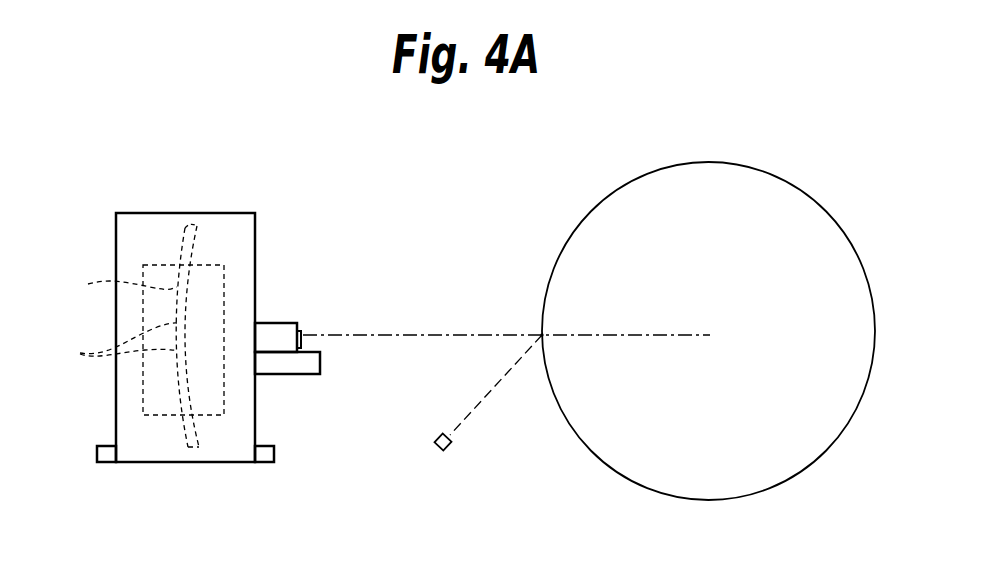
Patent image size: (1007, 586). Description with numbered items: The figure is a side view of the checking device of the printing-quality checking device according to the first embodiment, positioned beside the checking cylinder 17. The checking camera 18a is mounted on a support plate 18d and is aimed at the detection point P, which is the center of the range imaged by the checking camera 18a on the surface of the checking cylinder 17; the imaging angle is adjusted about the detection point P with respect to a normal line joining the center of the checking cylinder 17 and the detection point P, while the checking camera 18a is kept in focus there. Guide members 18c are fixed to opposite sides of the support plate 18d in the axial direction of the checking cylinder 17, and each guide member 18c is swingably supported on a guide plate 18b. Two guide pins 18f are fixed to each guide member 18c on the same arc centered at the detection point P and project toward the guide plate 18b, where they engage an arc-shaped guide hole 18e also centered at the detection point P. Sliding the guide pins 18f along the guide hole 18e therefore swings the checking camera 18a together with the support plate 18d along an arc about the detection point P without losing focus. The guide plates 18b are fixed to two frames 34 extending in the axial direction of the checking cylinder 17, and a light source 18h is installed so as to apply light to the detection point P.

The checking cylinder 17 is at (728, 178).
The checking camera 18a is at (280, 330).
The guide plate 18b is at (125, 233).
The guide member 18c is at (173, 365).
The support plate 18d is at (313, 365).
The guide hole 18e is at (110, 286).
The guide pin 18f is at (107, 346).
The light source 18h is at (437, 448).
The frame 34 is at (103, 458).
The detection point P is at (541, 334).